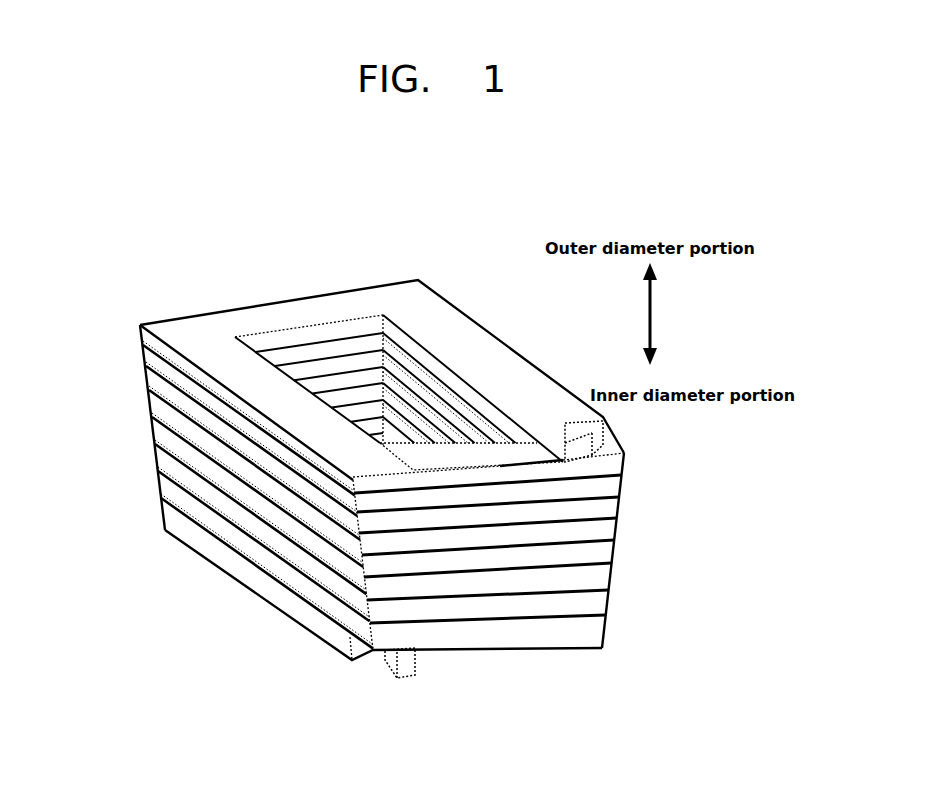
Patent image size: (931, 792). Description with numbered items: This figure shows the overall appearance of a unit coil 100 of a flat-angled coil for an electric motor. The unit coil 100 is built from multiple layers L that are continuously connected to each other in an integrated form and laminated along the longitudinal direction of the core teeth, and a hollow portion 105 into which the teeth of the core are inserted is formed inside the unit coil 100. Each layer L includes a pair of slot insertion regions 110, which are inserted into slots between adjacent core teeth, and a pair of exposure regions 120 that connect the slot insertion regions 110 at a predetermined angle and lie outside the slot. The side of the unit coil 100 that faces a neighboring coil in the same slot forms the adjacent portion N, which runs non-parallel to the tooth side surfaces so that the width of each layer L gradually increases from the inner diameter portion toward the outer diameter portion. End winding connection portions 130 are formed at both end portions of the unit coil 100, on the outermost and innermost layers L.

The unit coil 100 is at (111, 170).
The hollow portion 105 is at (414, 372).
The slot insertion region 110 is at (302, 377).
The exposure region 120 is at (371, 361).
The end winding connection portion 130 is at (497, 587).
The layer L is at (233, 494).
The adjacent portion N is at (401, 549).